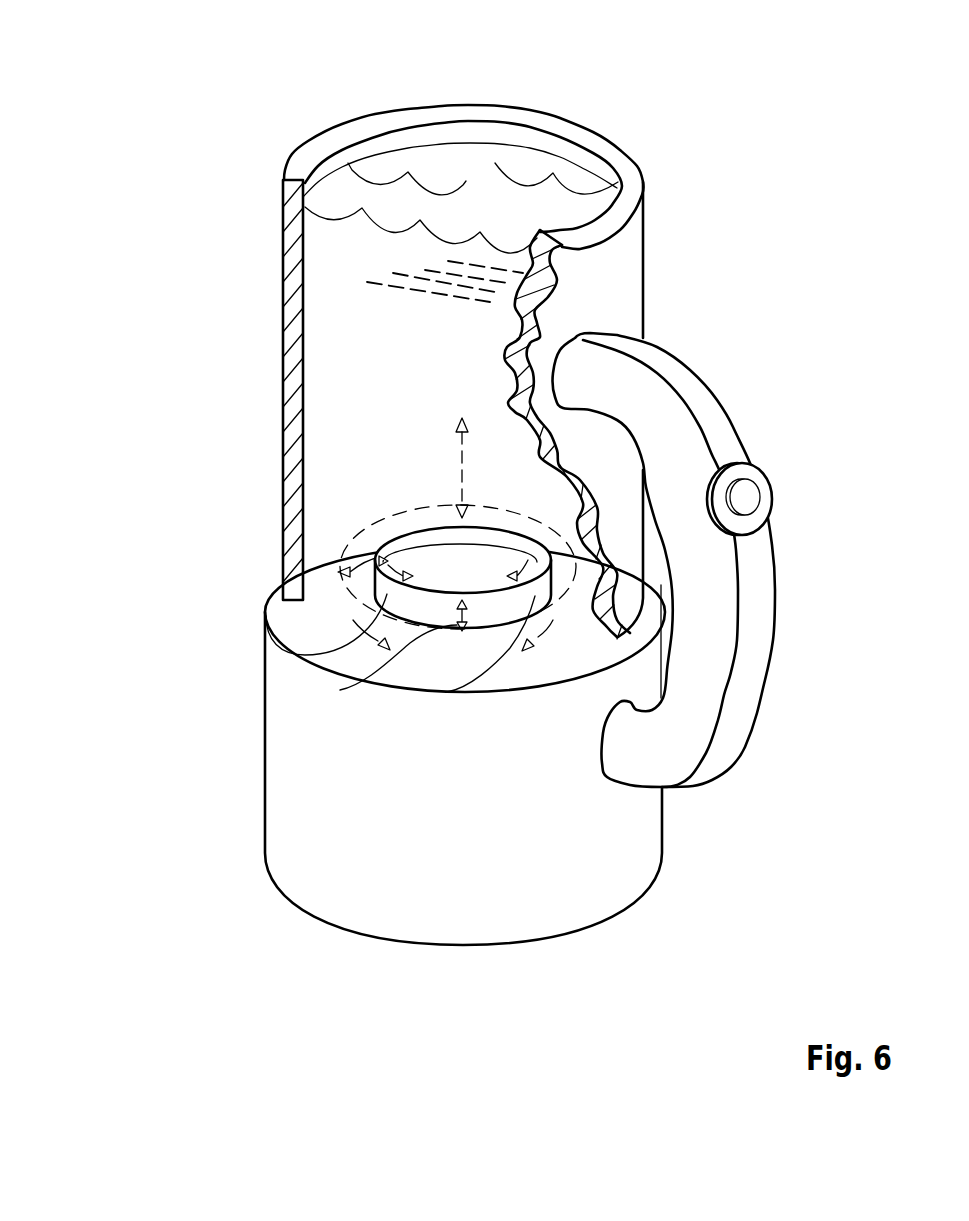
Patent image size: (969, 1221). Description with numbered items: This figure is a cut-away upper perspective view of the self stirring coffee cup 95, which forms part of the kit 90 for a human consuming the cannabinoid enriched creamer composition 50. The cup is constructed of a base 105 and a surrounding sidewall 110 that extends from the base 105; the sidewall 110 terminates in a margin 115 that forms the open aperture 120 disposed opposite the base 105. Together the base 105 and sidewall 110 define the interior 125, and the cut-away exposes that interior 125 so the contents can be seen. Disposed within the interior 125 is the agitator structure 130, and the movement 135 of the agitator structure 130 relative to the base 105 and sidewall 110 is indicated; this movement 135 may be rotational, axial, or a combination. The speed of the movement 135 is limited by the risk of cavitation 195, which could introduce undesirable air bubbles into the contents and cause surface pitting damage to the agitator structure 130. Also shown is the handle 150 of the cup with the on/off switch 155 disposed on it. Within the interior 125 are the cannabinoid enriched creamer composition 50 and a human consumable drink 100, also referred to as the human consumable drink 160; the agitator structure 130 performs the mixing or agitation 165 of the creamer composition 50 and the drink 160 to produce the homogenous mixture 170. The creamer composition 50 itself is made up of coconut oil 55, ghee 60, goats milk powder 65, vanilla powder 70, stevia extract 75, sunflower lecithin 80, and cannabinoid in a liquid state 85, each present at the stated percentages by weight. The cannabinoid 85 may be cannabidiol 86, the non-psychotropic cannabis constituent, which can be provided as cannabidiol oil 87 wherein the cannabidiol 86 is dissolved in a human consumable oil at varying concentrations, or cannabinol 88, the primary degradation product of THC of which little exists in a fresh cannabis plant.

The kit 90 is at (645, 95).
The self stirring coffee cup 95 is at (727, 339).
The base 105 is at (283, 758).
The surrounding sidewall 110 is at (302, 387).
The margin 115 is at (313, 150).
The open aperture 120 is at (456, 160).
The interior 125 is at (527, 224).
The agitator structure 130 is at (460, 546).
The movement of the agitator structure 135 is at (447, 692).
The handle 150 is at (732, 645).
The on/off switch 155 is at (750, 496).
The mixing or agitation 165 is at (460, 458).
The homogenous mixture 170 is at (359, 264).
The cavitation 195 is at (372, 560).
The cannabinoid enriched creamer composition 50 is at (206, 302).
The coconut oil 55 is at (206, 302).
The ghee 60 is at (206, 302).
The goats milk powder 65 is at (206, 302).
The vanilla powder 70 is at (206, 302).
The stevia extract 75 is at (206, 302).
The sunflower lecithin 80 is at (206, 302).
The cannabinoid in a liquid state 85 is at (206, 302).
The cannabidiol (CBD) 86 is at (206, 302).
The cannabidiol oil (CBD oil) 87 is at (206, 302).
The cannabinol (CBN) 88 is at (206, 302).
The human consumable drink 100 is at (206, 302).
The human consumable drink 160 is at (348, 312).